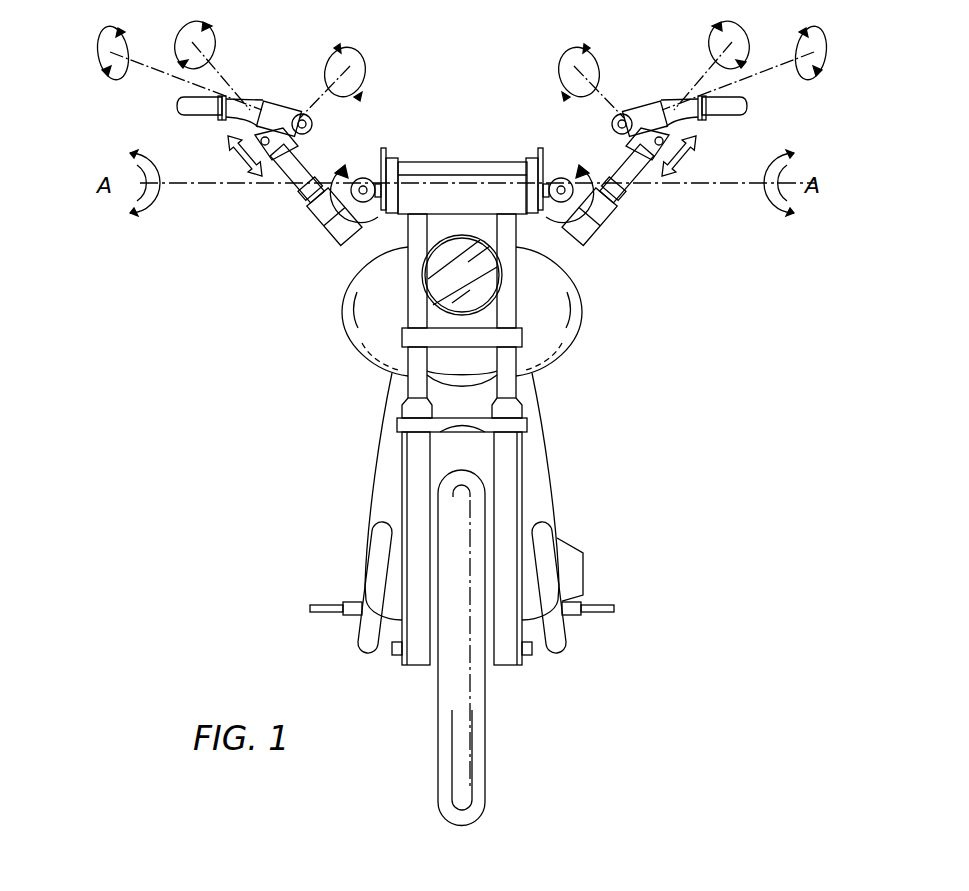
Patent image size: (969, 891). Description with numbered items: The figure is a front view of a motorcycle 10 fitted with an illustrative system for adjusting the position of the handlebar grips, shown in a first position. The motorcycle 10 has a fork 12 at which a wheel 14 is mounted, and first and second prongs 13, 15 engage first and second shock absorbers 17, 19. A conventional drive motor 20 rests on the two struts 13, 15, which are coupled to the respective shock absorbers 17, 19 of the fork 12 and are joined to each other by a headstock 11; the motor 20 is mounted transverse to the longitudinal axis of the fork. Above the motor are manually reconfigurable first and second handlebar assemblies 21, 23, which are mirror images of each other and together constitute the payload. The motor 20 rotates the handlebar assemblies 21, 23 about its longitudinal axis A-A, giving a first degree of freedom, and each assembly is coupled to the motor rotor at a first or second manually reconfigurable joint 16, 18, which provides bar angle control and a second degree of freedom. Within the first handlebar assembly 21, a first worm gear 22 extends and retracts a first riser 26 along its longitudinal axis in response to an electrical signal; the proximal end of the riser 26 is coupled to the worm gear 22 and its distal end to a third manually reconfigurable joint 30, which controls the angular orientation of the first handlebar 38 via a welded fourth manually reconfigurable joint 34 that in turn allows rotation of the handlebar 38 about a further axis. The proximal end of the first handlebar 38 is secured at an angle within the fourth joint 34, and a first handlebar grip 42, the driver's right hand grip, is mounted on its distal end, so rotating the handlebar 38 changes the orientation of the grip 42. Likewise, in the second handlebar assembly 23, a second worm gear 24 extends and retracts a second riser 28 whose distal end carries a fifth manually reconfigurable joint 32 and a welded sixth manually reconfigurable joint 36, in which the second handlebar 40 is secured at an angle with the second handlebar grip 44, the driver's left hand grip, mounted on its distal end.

The motorcycle 10 is at (284, 296).
The headstock 11 is at (512, 338).
The fork 12 is at (344, 551).
The first prong 13 is at (408, 237).
The wheel 14 is at (485, 748).
The second prong 15 is at (508, 237).
The first manually reconfigurable joint 16 is at (363, 178).
The first shock absorber 17 is at (412, 472).
The second manually reconfigurable joint 18 is at (561, 178).
The second shock absorber 19 is at (508, 452).
The motor 20 is at (474, 207).
The first handlebar assembly 21 is at (250, 212).
The first worm gear 22 is at (322, 201).
The second handlebar assembly 23 is at (705, 205).
The second worm gear 24 is at (594, 206).
The first riser 26 is at (300, 152).
The second riser 28 is at (622, 170).
The third manually reconfigurable joint 30 is at (268, 153).
The fifth manually reconfigurable joint 32 is at (674, 129).
The fourth manually reconfigurable joint 34 is at (287, 106).
The sixth manually reconfigurable joint 36 is at (637, 110).
The first handlebar 38 is at (266, 98).
The second handlebar 40 is at (658, 98).
The first handlebar grip 42 is at (188, 116).
The second handlebar grip 44 is at (736, 111).